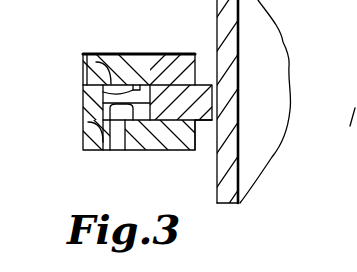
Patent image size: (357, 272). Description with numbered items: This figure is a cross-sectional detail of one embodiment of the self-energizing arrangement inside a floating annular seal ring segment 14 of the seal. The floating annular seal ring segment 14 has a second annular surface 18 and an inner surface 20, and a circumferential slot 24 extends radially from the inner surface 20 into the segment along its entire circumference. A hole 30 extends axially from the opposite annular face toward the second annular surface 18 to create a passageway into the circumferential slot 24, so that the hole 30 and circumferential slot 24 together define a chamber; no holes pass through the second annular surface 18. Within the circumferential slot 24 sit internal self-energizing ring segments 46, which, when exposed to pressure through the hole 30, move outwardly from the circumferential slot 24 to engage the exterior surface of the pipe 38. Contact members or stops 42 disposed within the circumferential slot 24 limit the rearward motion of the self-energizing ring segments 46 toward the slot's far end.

The floating annular seal ring segment 14 is at (92, 87).
The second annular surface 18 is at (117, 53).
The inner surface 20 is at (202, 143).
The circumferential slot 24 is at (88, 63).
The hole 30 is at (118, 141).
The pipe 38 is at (228, 86).
The contact member or stop 42 is at (110, 113).
The self-energizing ring segment 46 is at (180, 83).